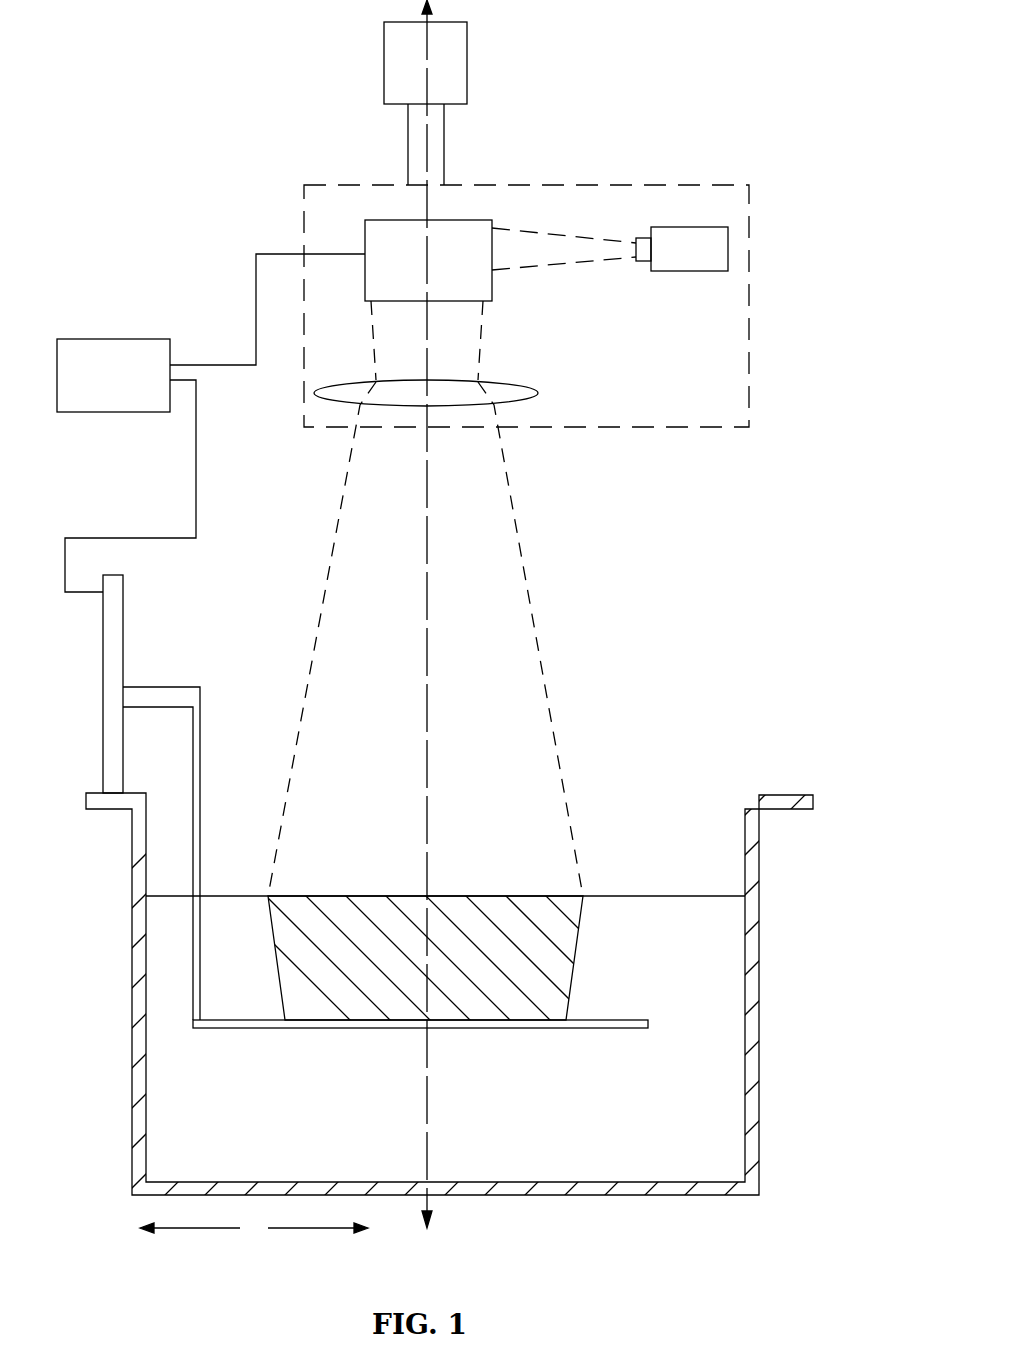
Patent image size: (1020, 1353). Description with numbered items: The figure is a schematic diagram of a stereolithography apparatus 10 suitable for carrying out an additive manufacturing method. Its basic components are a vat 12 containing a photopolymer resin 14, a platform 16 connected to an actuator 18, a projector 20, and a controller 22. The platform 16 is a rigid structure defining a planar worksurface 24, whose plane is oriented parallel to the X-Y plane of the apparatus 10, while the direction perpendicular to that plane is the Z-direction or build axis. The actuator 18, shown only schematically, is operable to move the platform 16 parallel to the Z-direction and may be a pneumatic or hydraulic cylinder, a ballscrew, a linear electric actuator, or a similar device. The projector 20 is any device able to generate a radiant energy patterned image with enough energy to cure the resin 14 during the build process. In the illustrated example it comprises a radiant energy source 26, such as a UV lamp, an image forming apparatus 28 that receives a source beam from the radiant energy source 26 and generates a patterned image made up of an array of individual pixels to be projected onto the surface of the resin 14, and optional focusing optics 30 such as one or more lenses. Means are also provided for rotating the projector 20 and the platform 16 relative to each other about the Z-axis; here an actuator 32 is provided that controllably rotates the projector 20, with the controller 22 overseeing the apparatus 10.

The stereolithography apparatus 10 is at (603, 85).
The vat 12 is at (755, 886).
The photopolymer resin 14 is at (722, 944).
The platform 16 is at (641, 1020).
The actuator 18 is at (123, 618).
The projector 20 is at (638, 428).
The controller 22 is at (127, 388).
The worksurface 24 is at (593, 1012).
The radiant energy source 26 is at (610, 270).
The image forming apparatus 28 is at (365, 228).
The focusing optics 30 is at (508, 382).
The actuator 32 is at (467, 47).